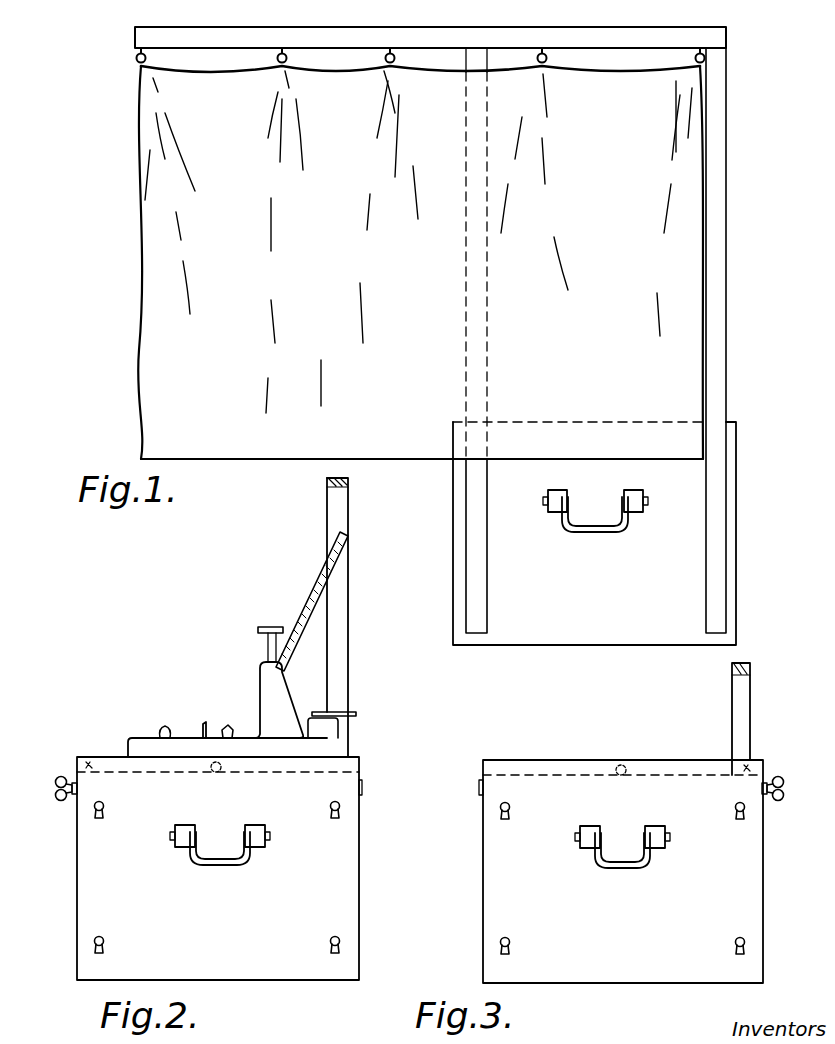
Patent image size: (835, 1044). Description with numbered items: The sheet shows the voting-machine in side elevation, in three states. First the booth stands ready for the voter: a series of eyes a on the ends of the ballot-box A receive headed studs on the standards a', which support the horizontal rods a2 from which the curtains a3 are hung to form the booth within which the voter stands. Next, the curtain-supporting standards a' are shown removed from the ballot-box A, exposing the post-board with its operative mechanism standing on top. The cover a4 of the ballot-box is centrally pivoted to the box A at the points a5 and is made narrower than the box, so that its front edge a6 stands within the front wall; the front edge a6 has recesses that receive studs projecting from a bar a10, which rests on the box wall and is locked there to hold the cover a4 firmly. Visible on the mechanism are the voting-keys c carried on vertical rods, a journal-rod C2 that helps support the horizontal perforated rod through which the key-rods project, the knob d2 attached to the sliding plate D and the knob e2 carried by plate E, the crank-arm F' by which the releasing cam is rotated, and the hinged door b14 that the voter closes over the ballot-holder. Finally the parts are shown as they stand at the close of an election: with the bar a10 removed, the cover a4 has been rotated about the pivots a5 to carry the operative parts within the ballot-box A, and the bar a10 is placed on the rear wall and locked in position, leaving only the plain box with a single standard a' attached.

In FIG. 1, the horizontal rods a2 is at (600, 40).
In FIG. 1, the curtains a3 is at (152, 172).
In FIG. 1, the standards a' is at (596, 340).
In FIG. 2, the standards a' is at (328, 617).
In FIG. 3, the standards a' is at (724, 719).
In FIG. 1, the ballot-box A is at (577, 632).
In FIG. 2, the ballot-box A is at (351, 882).
In FIG. 3, the ballot-box A is at (496, 888).
In FIG. 2, the cover a4 is at (119, 770).
In FIG. 3, the cover a4 is at (542, 770).
In FIG. 2, the pivots a5 is at (216, 783).
In FIG. 3, the pivots a5 is at (616, 786).
In FIG. 2, the front edge a6 is at (92, 764).
In FIG. 3, the front edge a6 is at (752, 768).
In FIG. 2, the bar a10 is at (90, 762).
In FIG. 3, the bar a10 is at (756, 768).
In FIG. 2, the eyes a is at (217, 879).
In FIG. 3, the eyes a is at (623, 879).
In FIG. 2, the knob e2 is at (164, 726).
In FIG. 2, the door b14 is at (208, 722).
In FIG. 2, the knob d2 is at (231, 730).
In FIG. 2, the voting-keys c is at (256, 631).
In FIG. 2, the journal-rod C2 is at (286, 675).
In FIG. 2, the crank-arm F' is at (350, 711).